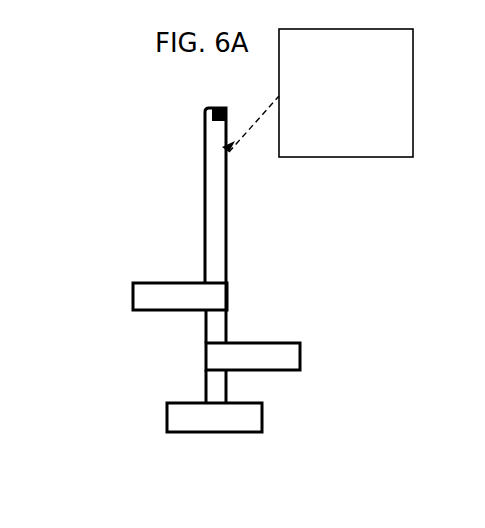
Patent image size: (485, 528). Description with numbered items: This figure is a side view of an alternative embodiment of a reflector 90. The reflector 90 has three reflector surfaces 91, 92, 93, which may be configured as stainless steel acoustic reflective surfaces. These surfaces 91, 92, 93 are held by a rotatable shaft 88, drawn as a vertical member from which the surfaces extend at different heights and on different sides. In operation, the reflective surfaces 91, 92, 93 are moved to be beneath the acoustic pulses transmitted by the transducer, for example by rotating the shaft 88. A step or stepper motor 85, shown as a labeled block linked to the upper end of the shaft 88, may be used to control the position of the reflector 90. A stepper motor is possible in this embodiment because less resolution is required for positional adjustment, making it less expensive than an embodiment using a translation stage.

The stepper motor 85 is at (413, 127).
The rotatable shaft 88 is at (221, 203).
The reflector 90 is at (101, 353).
The reflector surface 91 is at (150, 282).
The reflector surface 92 is at (270, 349).
The reflector surface 93 is at (243, 418).